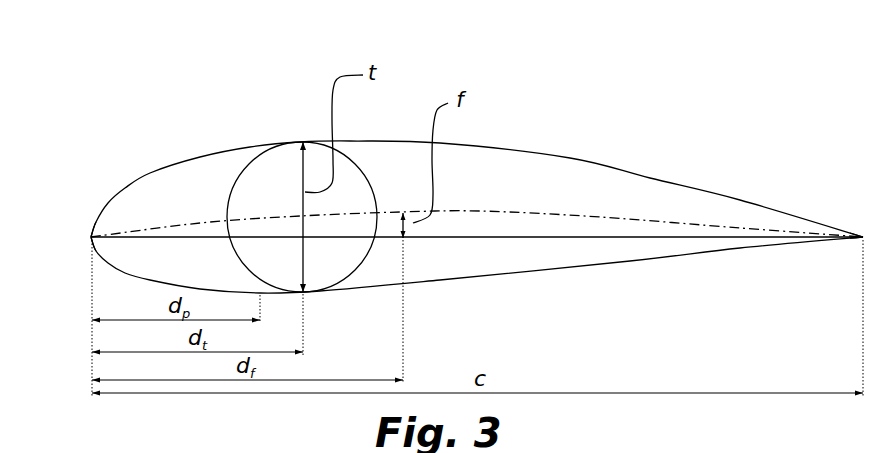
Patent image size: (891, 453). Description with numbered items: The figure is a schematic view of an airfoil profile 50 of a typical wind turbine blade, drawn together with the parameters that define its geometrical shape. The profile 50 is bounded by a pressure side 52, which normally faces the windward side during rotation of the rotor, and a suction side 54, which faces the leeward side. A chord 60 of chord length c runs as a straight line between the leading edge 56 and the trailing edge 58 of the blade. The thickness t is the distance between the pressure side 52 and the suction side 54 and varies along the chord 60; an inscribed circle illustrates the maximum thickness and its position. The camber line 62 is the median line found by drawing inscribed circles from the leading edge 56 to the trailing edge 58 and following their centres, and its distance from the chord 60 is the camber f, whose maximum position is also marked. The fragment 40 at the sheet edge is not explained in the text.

The airfoil profile 50 is at (452, 66).
The pressure side 52 is at (630, 262).
The suction side 54 is at (572, 158).
The leading edge 56 is at (91, 237).
The trailing edge 58 is at (862, 236).
The chord 60 is at (667, 237).
The camber line 62 is at (467, 212).
The blade 40 is at (14, 433).